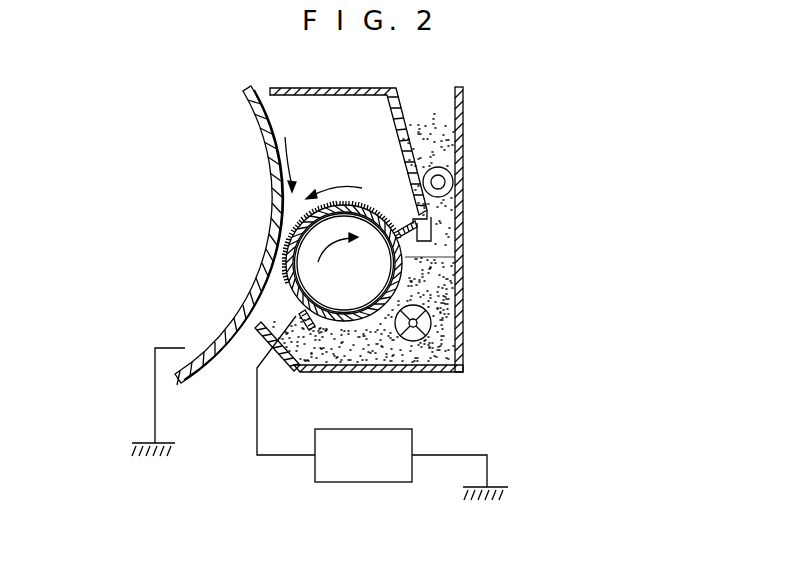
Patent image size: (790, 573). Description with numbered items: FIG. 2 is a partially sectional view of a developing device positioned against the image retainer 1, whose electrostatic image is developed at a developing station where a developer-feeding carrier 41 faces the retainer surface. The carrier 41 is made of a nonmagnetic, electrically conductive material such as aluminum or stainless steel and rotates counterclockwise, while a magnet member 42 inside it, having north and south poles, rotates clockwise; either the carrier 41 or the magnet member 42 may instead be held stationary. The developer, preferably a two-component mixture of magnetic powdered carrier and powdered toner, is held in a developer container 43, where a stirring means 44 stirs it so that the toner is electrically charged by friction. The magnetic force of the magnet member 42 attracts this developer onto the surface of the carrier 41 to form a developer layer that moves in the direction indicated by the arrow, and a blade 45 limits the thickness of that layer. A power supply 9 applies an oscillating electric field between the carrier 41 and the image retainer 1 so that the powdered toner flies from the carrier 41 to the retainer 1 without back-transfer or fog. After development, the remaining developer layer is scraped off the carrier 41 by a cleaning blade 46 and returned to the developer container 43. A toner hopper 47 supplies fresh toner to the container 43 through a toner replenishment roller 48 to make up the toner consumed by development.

The image retainer 1 is at (198, 373).
The power supply 9 is at (373, 483).
The developer-feeding carrier 41 is at (363, 320).
The magnet member 42 is at (345, 306).
The developer container 43 is at (433, 355).
The stirring means 44 is at (432, 323).
The blade 45 is at (424, 218).
The cleaning blade 46 is at (305, 333).
The toner hopper 47 is at (430, 118).
The toner replenishment roller 48 is at (453, 182).